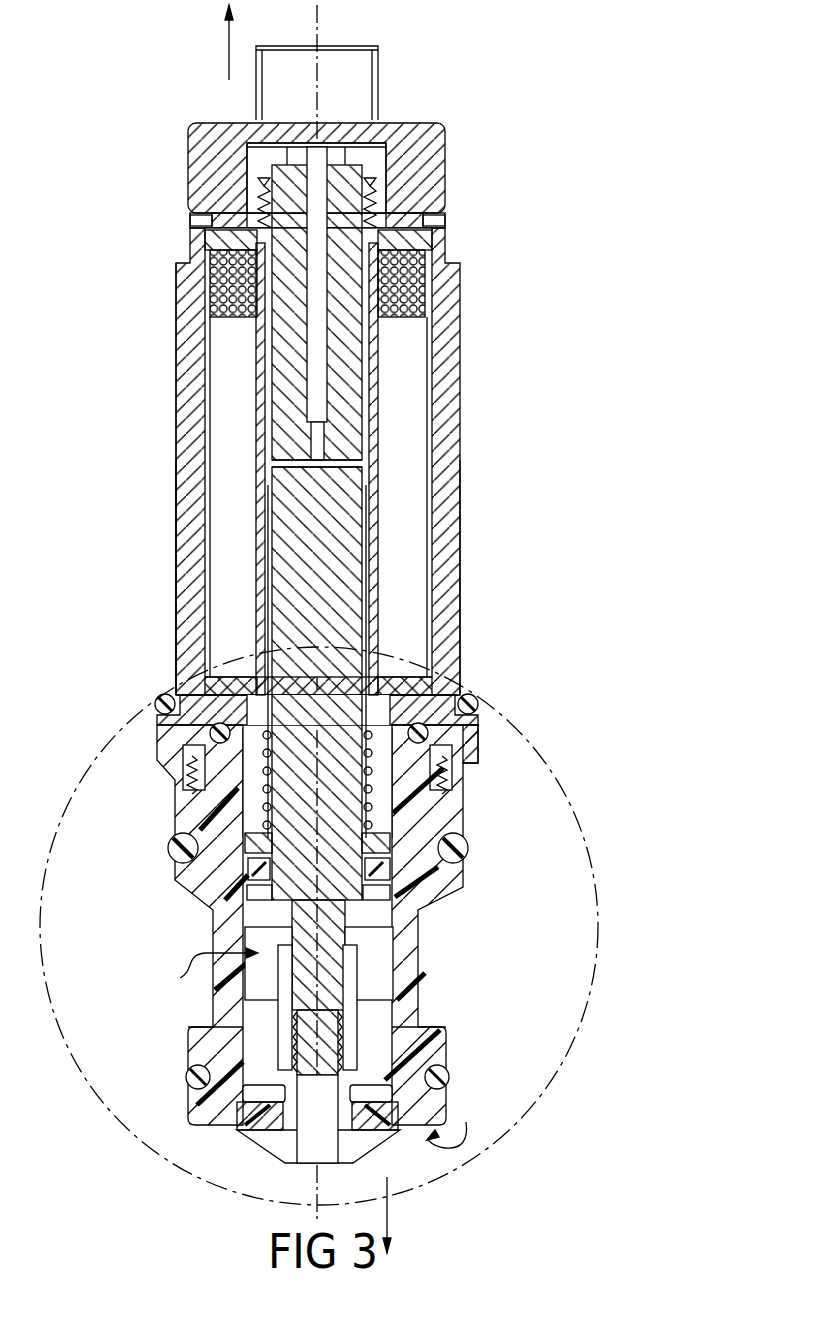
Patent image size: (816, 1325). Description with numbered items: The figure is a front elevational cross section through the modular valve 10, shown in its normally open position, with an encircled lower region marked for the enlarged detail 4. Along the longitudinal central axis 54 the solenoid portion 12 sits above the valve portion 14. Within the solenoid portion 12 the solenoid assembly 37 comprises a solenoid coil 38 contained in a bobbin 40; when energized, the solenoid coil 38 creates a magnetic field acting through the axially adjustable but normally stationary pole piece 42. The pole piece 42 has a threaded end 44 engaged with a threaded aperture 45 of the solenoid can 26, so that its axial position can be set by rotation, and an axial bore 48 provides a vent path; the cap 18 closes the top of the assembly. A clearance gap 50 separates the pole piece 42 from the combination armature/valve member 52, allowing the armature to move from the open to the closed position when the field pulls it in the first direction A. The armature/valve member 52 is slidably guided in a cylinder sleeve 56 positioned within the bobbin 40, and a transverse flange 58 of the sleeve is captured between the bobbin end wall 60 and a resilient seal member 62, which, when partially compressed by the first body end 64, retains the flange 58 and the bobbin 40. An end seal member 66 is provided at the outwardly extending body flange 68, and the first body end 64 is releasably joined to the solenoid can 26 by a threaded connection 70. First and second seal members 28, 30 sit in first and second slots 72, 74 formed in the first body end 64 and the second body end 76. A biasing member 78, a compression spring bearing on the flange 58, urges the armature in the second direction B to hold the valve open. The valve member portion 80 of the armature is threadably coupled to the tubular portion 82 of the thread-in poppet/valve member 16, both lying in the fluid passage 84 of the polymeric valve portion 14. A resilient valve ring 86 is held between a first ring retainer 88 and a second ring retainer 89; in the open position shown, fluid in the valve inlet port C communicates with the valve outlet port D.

The modular valve 10 is at (590, 358).
The solenoid portion 12 is at (468, 600).
The valve portion 14 is at (432, 890).
The thread-in poppet/valve member 16 is at (392, 1158).
The cap 18 is at (200, 135).
The solenoid can 26 is at (188, 350).
The first seal member 28 is at (462, 850).
The second seal member 30 is at (447, 1077).
The solenoid assembly 37 is at (468, 396).
The solenoid coil 38 is at (215, 297).
The bobbin 40 is at (375, 440).
The pole piece 42 is at (287, 352).
The threaded end 44 is at (262, 207).
The threaded aperture 45 is at (392, 205).
The axial bore 48 is at (325, 338).
The clearance gap 50 is at (280, 462).
The armature/valve member 52 is at (352, 532).
The longitudinal central axis 54 is at (333, 37).
The cylinder sleeve 56 is at (262, 567).
The flange 58 is at (225, 712).
The bobbin end wall 60 is at (232, 670).
The seal member 62 is at (190, 745).
The first body end 64 is at (205, 822).
The end seal member 66 is at (478, 698).
The body flange 68 is at (478, 735).
The threaded connection 70 is at (440, 772).
The first slot 72 is at (460, 830).
The second slot 74 is at (198, 1066).
The second body end 76 is at (440, 1052).
The biasing member 78 is at (200, 775).
The valve member portion 80 is at (300, 933).
The tubular portion 82 is at (350, 1030).
The fluid passage 84 is at (372, 957).
The valve ring 86 is at (255, 1130).
The first ring retainer 88 is at (272, 1150).
The second ring retainer 89 is at (275, 1103).
The detail circle FIG. 4 is at (527, 735).
The first direction A is at (218, 42).
The second direction B is at (396, 1215).
The valve inlet port C is at (212, 969).
The valve outlet port D is at (452, 1124).